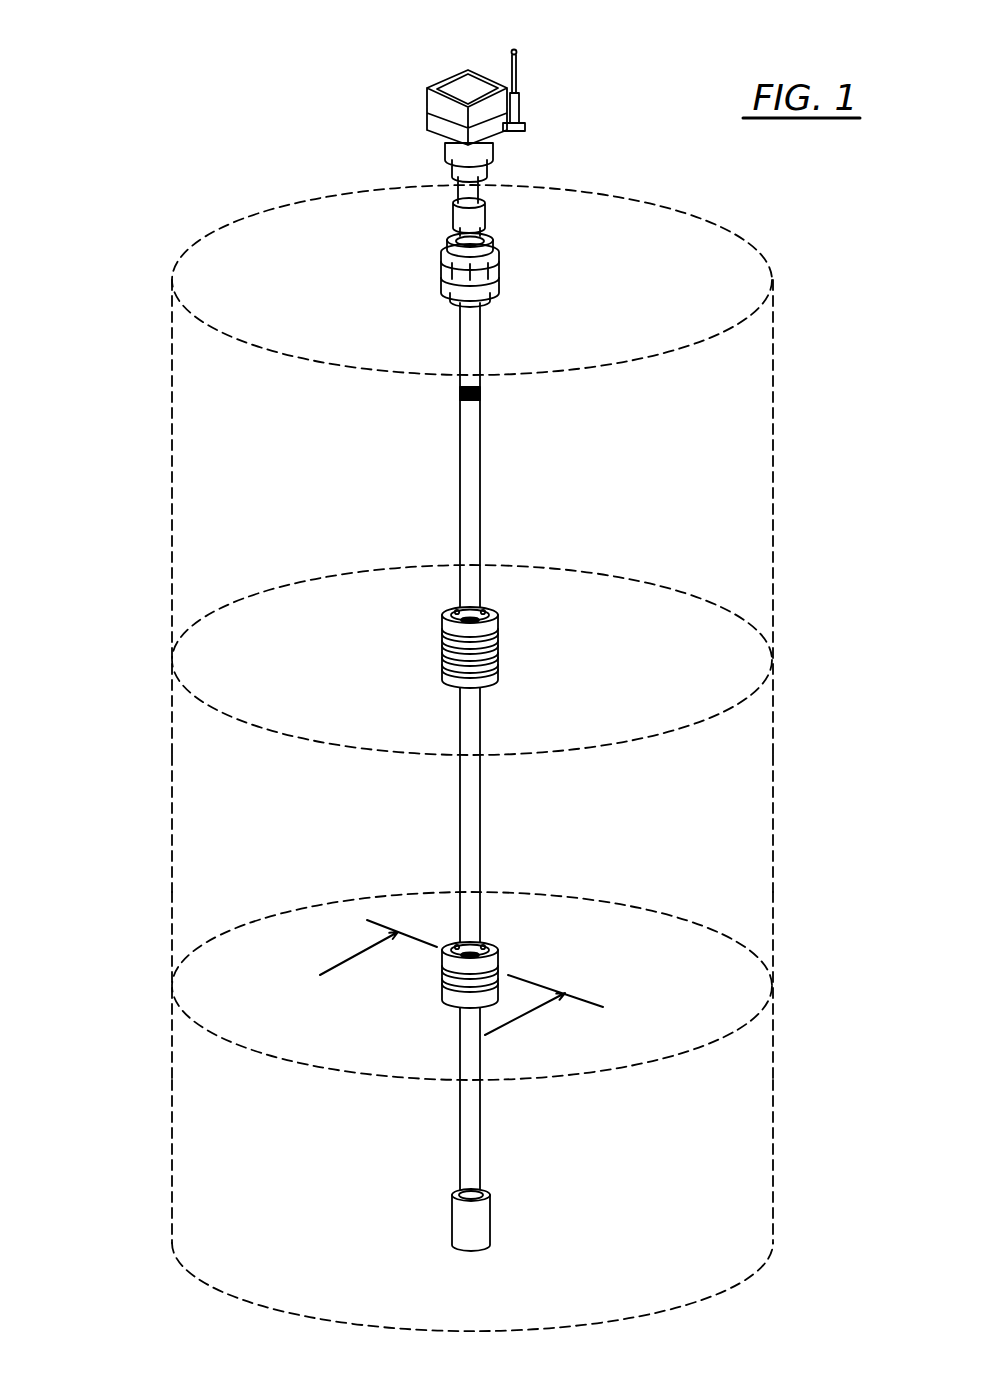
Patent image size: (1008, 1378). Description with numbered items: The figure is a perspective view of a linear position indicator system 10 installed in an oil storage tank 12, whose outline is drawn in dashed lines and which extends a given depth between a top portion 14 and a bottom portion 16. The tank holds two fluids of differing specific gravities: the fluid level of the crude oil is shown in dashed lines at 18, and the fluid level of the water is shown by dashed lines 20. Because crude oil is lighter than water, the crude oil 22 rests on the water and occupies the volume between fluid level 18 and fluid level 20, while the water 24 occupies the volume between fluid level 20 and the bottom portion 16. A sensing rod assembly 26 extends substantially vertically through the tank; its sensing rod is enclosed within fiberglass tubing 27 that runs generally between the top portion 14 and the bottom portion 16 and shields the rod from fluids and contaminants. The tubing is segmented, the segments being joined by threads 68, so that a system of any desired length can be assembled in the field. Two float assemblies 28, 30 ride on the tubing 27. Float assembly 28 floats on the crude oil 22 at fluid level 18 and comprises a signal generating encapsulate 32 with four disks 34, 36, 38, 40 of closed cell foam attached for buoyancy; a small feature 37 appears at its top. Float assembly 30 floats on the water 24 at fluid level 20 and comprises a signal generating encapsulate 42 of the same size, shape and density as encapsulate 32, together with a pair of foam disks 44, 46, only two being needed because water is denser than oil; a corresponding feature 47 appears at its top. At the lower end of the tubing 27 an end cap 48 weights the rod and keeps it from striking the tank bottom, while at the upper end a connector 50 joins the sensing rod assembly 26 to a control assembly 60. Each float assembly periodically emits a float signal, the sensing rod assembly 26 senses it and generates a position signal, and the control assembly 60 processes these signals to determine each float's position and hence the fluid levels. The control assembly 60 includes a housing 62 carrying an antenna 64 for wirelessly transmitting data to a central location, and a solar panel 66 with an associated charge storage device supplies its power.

The linear position indicator system 10 is at (212, 122).
The oil storage tank 12 is at (141, 455).
The top portion 14 is at (157, 253).
The bottom portion 16 is at (162, 1259).
The fluid level 18 is at (773, 660).
The fluid level 20 is at (773, 986).
The crude oil 22 is at (218, 795).
The water 24 is at (205, 1090).
The sensing rod assembly 26 is at (496, 509).
The fiberglass tubing 27 is at (478, 820).
The float assembly 28 is at (513, 634).
The float assembly 30 is at (513, 952).
The signal generating encapsulate 32 is at (493, 670).
The foam disk 34 is at (448, 620).
The foam disk 36 is at (447, 633).
The bearing 37 is at (480, 613).
The foam disk 38 is at (445, 645).
The foam disk 40 is at (445, 656).
The signal generating encapsulate 42 is at (455, 995).
The foam disk 44 is at (447, 970).
The foam disk 46 is at (447, 963).
The bearing 47 is at (487, 948).
The end cap 48 is at (483, 1218).
The connector 50 is at (496, 262).
The control assembly 60 is at (542, 110).
The housing 62 is at (432, 118).
The antenna 64 is at (518, 52).
The solar panel 66 is at (466, 80).
The threads 68 is at (458, 393).